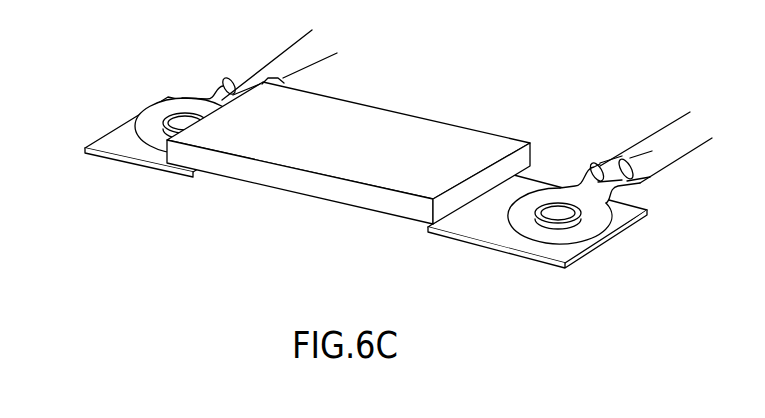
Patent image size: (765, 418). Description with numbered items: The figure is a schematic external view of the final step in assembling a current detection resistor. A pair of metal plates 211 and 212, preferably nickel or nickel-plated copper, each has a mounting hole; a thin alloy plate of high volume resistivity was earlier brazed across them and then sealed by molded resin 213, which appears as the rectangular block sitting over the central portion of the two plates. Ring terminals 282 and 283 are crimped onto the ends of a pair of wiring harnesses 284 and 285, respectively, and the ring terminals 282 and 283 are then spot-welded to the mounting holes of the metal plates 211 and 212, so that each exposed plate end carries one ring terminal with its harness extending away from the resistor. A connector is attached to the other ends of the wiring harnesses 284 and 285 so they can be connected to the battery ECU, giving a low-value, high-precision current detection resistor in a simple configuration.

The metal plate 211 is at (118, 143).
The metal plate 212 is at (483, 228).
The molded resin 213 is at (378, 118).
The ring terminal 282 is at (193, 110).
The ring terminal 283 is at (590, 227).
The wiring harness 284 is at (287, 60).
The wiring harness 285 is at (665, 142).